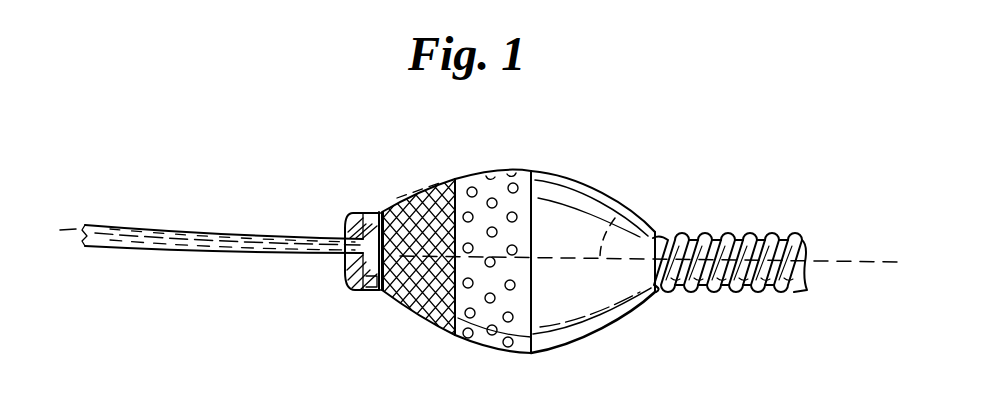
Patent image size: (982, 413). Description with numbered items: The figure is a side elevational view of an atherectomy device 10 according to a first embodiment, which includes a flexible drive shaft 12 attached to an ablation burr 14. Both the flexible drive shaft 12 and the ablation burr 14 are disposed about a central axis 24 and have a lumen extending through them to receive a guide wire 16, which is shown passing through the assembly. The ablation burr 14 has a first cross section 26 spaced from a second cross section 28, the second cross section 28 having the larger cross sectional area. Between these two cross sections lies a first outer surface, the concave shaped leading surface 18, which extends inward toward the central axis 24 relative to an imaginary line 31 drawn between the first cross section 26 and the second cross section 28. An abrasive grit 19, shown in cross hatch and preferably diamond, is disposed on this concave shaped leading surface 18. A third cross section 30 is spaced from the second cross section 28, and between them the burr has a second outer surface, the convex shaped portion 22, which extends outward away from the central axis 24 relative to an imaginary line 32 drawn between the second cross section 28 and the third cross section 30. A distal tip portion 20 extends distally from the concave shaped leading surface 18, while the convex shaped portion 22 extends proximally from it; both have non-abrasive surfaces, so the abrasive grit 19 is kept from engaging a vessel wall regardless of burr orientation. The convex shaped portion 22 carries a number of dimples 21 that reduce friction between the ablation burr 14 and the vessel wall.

The atherectomy device 10 is at (615, 136).
The flexible drive shaft 12 is at (736, 284).
The ablation burr 14 is at (597, 338).
The guide wire 16 is at (132, 236).
The concave shaped leading surface 18 is at (418, 300).
The abrasive grit 19 is at (397, 294).
The distal tip portion 20 is at (350, 230).
The dimples 21 is at (514, 290).
The convex shaped portion 22 is at (497, 347).
The central axis 24 is at (652, 197).
The first cross section 26 is at (372, 206).
The second cross section 28 is at (462, 167).
The third cross section 30 is at (523, 163).
The imaginary line 31 is at (397, 200).
The imaginary line 32 is at (575, 178).